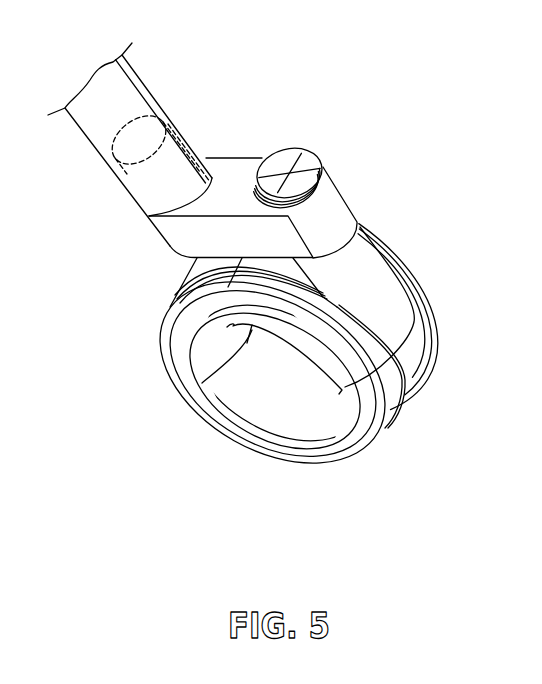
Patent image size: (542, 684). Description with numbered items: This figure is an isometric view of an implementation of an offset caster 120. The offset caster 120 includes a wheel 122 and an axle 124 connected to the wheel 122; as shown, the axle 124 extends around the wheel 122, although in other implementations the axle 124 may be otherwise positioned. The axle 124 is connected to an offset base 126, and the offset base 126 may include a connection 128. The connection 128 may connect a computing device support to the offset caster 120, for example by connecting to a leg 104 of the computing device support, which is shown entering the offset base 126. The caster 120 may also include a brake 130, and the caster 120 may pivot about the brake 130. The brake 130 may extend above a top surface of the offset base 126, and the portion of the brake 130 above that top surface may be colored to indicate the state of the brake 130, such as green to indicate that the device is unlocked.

The offset caster 120 is at (420, 70).
The leg 104 is at (153, 97).
The connection 128 is at (168, 184).
The offset base 126 is at (252, 252).
The brake 130 is at (295, 128).
The axle 124 is at (405, 390).
The wheel 122 is at (247, 452).